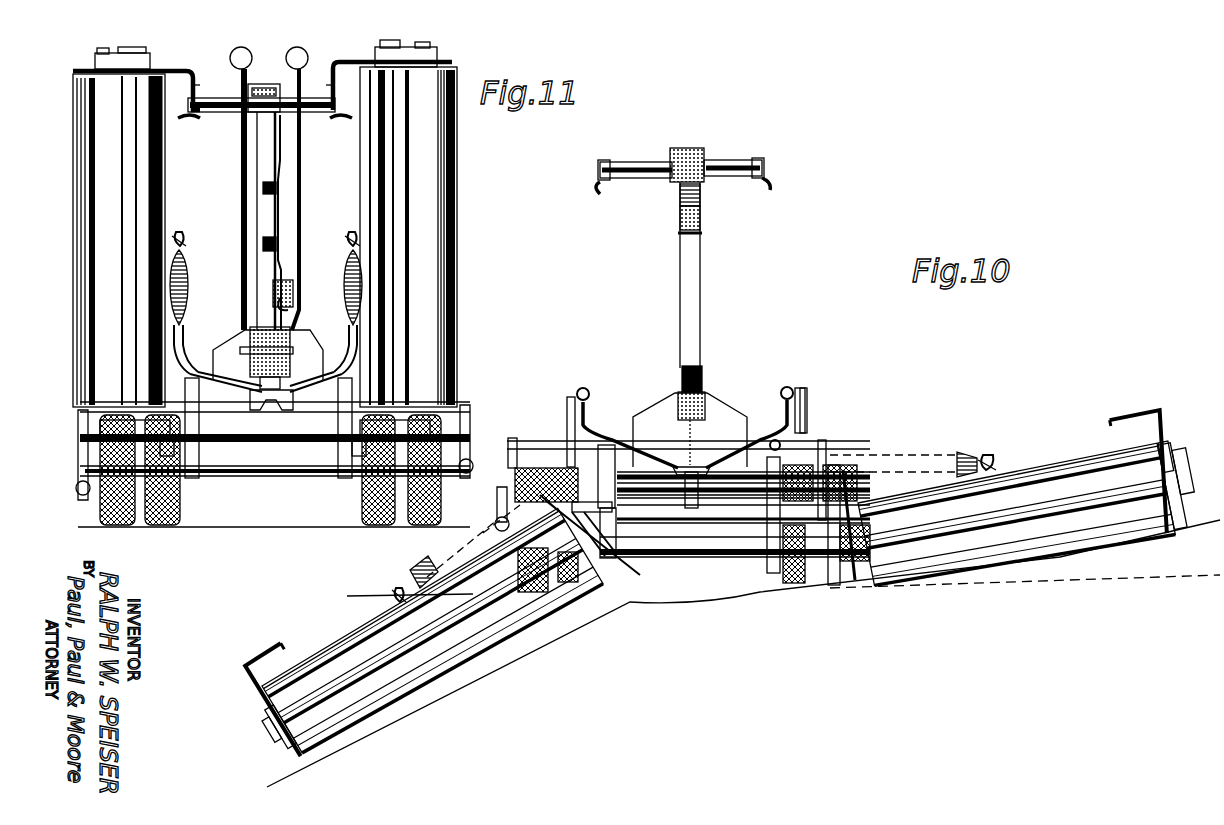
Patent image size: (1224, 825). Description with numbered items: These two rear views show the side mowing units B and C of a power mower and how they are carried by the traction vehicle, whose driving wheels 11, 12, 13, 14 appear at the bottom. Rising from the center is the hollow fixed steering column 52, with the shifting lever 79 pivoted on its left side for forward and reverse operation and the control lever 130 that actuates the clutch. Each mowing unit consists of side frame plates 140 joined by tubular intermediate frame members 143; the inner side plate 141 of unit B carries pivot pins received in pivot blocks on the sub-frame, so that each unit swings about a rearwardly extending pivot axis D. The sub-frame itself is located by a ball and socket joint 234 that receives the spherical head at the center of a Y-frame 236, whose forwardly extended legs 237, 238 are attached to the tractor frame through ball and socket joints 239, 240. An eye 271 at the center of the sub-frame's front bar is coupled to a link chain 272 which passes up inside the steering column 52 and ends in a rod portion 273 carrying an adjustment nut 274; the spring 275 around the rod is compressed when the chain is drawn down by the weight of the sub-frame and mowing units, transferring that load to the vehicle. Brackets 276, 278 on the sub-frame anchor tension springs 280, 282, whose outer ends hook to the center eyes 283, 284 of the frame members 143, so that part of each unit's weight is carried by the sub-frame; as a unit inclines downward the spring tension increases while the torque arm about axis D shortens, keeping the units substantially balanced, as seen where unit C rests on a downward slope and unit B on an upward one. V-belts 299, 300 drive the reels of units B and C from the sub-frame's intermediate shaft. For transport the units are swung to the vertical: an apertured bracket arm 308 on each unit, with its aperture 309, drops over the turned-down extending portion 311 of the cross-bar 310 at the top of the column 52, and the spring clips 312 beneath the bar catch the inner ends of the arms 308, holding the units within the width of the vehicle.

In FIG. 11, the driving wheel 11 is at (418, 526).
In FIG. 11, the driving wheel 12 is at (370, 526).
In FIG. 11, the driving wheel 13 is at (166, 526).
In FIG. 11, the driving wheel 14 is at (118, 526).
In FIG. 11, the fixed steering column 52 is at (262, 165).
In FIG. 10, the fixed steering column 52 is at (694, 281).
In FIG. 11, the shifting lever 79 is at (243, 290).
In FIG. 11, the control lever 130 is at (300, 285).
In FIG. 10, the side frame plate 140 is at (1170, 442).
In FIG. 10, the inner side plate 141 is at (834, 585).
In FIG. 11, the intermediate frame member 143 is at (150, 196).
In FIG. 10, the intermediate frame member 143 is at (324, 650).
In FIG. 10, the ball and socket joint 234 is at (684, 470).
In FIG. 10, the Y-frame 236 is at (775, 425).
In FIG. 10, the leg of Y-frame 237 is at (795, 418).
In FIG. 10, the leg of Y-frame 238 is at (590, 410).
In FIG. 10, the ball and socket joint 239 is at (792, 388).
In FIG. 10, the ball and socket joint 240 is at (585, 388).
In FIG. 10, the eye 271 is at (690, 544).
In FIG. 10, the link chain 272 is at (708, 415).
In FIG. 10, the rod portion 273 is at (703, 214).
In FIG. 10, the adjustment nut 274 is at (703, 197).
In FIG. 10, the spring 275 is at (703, 233).
In FIG. 10, the bracket 276 is at (602, 447).
In FIG. 10, the bracket 278 is at (785, 445).
In FIG. 11, the tension spring 280 is at (190, 270).
In FIG. 10, the tension spring 280 is at (478, 530).
In FIG. 11, the tension spring 282 is at (348, 268).
In FIG. 10, the tension spring 282 is at (928, 452).
In FIG. 11, the center eye 283 is at (354, 236).
In FIG. 10, the center eye 283 is at (992, 455).
In FIG. 11, the center eye 284 is at (188, 235).
In FIG. 10, the center eye 284 is at (397, 590).
In FIG. 10, the V-belt 299 is at (615, 556).
In FIG. 10, the V-belt 300 is at (800, 585).
In FIG. 11, the bracket arm 308 is at (195, 70).
In FIG. 10, the bracket arm 308 is at (246, 660).
In FIG. 11, the aperture 309 is at (200, 86).
In FIG. 10, the aperture 309 is at (282, 642).
In FIG. 11, the cross-bar 310 is at (316, 98).
In FIG. 10, the cross-bar 310 is at (735, 160).
In FIG. 10, the extending portion 311 is at (612, 160).
In FIG. 11, the spring clip 312 is at (197, 120).
In FIG. 10, the spring clip 312 is at (616, 188).
In FIG. 11, the mowing unit B is at (458, 202).
In FIG. 10, the mowing unit B is at (1048, 558).
In FIG. 11, the mowing unit C is at (80, 255).
In FIG. 10, the mowing unit C is at (472, 682).
In FIG. 11, the pivot axis D is at (185, 458).
In FIG. 10, the pivot axis D is at (600, 545).